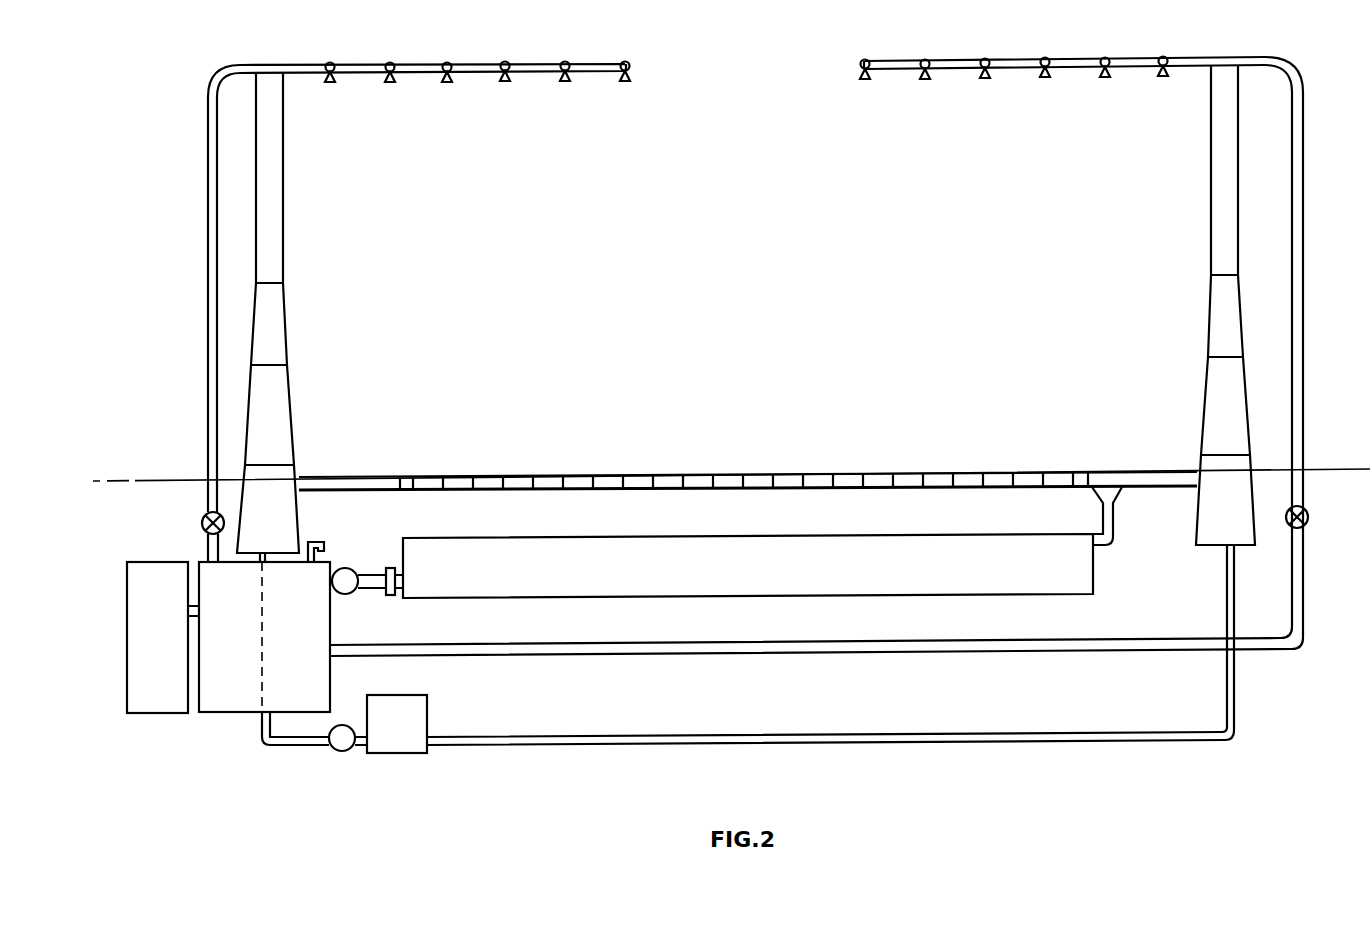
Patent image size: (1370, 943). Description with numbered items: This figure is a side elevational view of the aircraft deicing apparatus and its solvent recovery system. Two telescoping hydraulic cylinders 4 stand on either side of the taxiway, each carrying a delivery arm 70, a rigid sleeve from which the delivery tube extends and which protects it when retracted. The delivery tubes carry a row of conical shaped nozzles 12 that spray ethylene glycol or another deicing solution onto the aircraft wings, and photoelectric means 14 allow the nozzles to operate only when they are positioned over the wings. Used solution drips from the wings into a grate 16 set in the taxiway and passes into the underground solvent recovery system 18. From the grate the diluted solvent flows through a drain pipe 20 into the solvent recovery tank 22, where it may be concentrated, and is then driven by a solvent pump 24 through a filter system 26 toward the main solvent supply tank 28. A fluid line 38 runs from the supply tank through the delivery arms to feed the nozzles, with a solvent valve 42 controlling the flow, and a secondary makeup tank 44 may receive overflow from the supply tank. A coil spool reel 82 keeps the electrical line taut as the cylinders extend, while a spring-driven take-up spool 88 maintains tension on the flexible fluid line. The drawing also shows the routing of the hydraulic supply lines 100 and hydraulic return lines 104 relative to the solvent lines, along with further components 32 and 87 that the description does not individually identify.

The telescoping hydraulic cylinder 4 is at (275, 422).
The conical shaped nozzle 12 is at (447, 83).
The photoelectric means 14 is at (388, 62).
The grate 16 is at (483, 485).
The solvent recovery system 18 is at (1018, 466).
The drain pipe 20 is at (1113, 530).
The solvent recovery tank 22 is at (972, 552).
The solvent pump 24 is at (345, 568).
The filter system 26 is at (392, 597).
The fluid tank 28 is at (229, 695).
The shaft 32 is at (388, 568).
The fluid line 38 is at (212, 546).
The solvent valve 42 is at (207, 512).
The secondary makeup tank 44 is at (325, 541).
The delivery arm 70 is at (422, 63).
The coil spool reel 82 is at (208, 242).
The heater 87 is at (407, 738).
The spring-driven take-up spool 88 is at (342, 752).
The hydraulic supply line 100 is at (1040, 742).
The hydraulic return line 104 is at (748, 664).